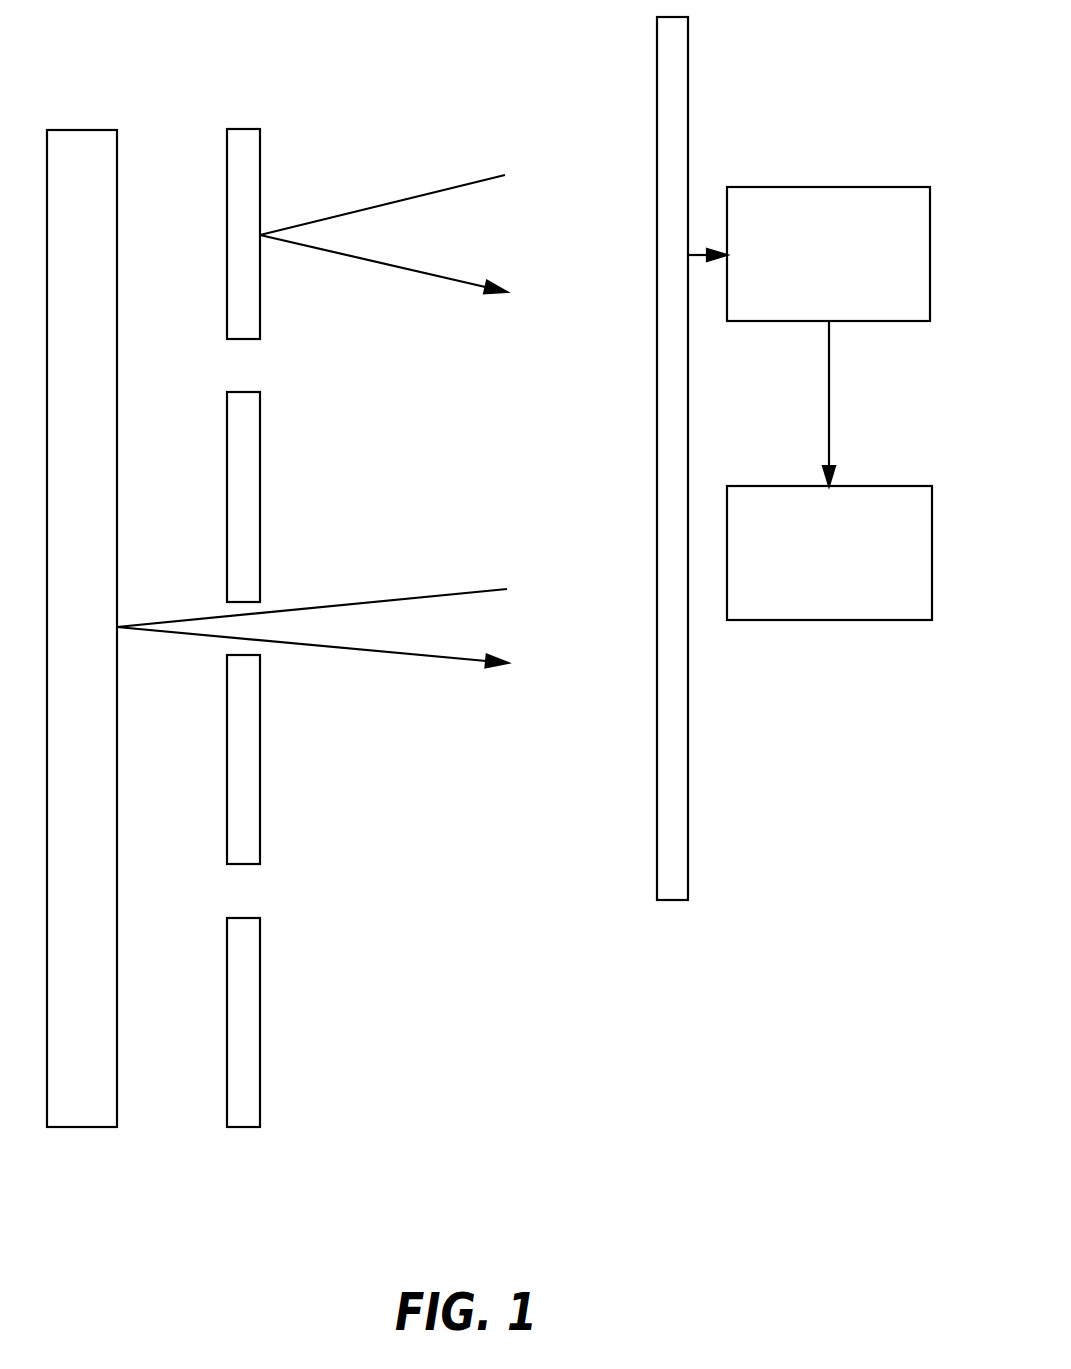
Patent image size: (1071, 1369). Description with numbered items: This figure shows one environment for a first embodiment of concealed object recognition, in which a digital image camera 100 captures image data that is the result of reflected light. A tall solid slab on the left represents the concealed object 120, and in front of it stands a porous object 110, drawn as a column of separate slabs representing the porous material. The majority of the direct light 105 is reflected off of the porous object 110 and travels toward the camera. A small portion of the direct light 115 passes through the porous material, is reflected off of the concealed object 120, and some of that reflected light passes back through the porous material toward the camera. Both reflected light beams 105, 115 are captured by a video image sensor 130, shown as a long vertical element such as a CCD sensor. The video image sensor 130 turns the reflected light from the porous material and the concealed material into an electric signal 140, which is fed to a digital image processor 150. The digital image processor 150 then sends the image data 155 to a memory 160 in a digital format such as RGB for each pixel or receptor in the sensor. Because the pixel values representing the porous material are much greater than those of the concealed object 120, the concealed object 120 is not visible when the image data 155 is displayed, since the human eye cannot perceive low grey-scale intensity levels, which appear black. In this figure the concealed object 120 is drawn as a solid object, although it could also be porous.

The digital image camera 100 is at (682, 573).
The direct light 105 is at (400, 200).
The porous object 110 is at (247, 128).
The direct light 115 is at (377, 652).
The concealed object 120 is at (68, 130).
The video image sensor 130 is at (657, 412).
The electric signal 140 is at (700, 250).
The digital image processor 150 is at (828, 254).
The image data 155 is at (829, 362).
The memory 160 is at (829, 553).